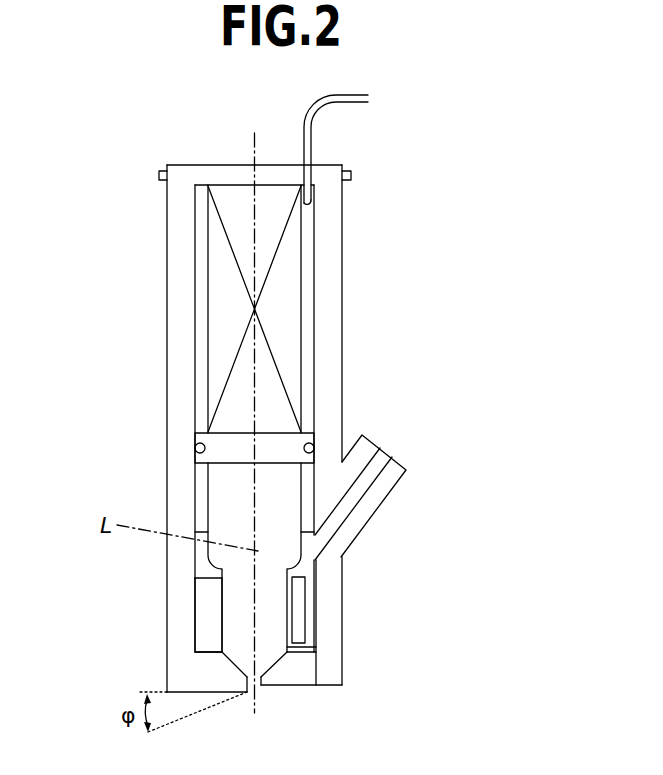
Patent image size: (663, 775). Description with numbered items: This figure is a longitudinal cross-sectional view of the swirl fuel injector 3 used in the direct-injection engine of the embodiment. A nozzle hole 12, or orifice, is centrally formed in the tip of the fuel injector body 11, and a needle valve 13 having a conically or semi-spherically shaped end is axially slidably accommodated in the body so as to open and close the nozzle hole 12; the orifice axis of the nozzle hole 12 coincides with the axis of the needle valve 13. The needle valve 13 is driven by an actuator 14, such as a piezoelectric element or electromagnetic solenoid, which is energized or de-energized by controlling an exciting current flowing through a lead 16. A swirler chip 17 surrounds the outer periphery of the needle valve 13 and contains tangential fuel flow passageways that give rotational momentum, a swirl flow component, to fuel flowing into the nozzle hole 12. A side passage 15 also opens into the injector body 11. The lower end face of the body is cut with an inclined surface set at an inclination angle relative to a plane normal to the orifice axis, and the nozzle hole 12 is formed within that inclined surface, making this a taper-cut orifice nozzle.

The injector 3 is at (352, 349).
The fuel injector body 11 is at (325, 653).
The nozzle hole 12 is at (257, 686).
The needle valve 13 is at (267, 583).
The actuator 14 is at (228, 333).
The supply pipe 15 is at (388, 446).
The lead 16 is at (330, 103).
The swirler chip 17 is at (203, 606).